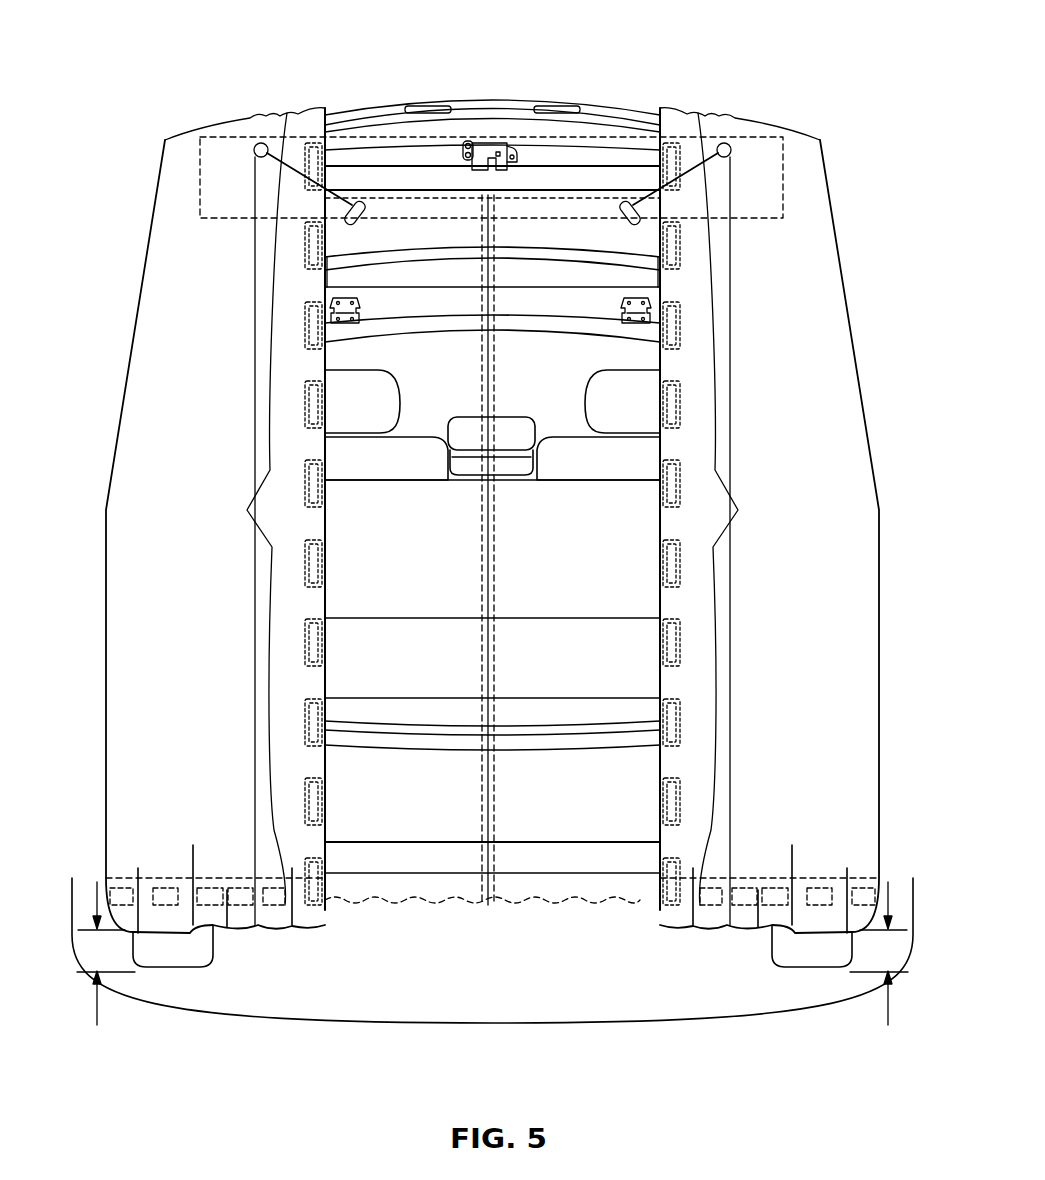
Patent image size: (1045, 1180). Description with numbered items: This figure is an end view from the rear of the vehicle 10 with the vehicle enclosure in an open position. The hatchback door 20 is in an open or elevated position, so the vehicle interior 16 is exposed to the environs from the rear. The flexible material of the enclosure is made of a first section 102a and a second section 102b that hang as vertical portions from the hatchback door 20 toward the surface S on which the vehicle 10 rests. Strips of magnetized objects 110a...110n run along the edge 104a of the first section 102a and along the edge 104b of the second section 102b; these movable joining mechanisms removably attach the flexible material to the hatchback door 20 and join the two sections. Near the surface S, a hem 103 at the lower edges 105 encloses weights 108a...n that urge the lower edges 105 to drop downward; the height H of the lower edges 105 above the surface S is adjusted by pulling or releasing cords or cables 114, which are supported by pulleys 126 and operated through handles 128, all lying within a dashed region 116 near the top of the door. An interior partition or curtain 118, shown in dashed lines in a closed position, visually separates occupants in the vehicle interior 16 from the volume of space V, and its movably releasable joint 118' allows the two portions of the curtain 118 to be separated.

The vehicle 10 is at (390, 50).
The vehicle interior 16 is at (577, 203).
The hatchback door 20 is at (487, 122).
The volume of space V is at (390, 203).
The first section 102a is at (844, 372).
The second section 102b is at (137, 372).
The hem 103 is at (132, 883).
The edge of the first section 104a is at (657, 523).
The edge of the second section 104b is at (327, 523).
The lower edges 105 is at (247, 928).
The weights 108a...n is at (293, 836).
The magnetized objects 110a...110n is at (493, 524).
The cord or cable 114 is at (255, 315).
The roof cross region 116 is at (200, 183).
The interior partition or curtain 118 is at (496, 658).
The movably releasable joint 118' is at (534, 550).
The pulleys 126 is at (261, 143).
The handles 128 is at (352, 197).
The height H is at (492, 953).
The surface S is at (718, 1000).